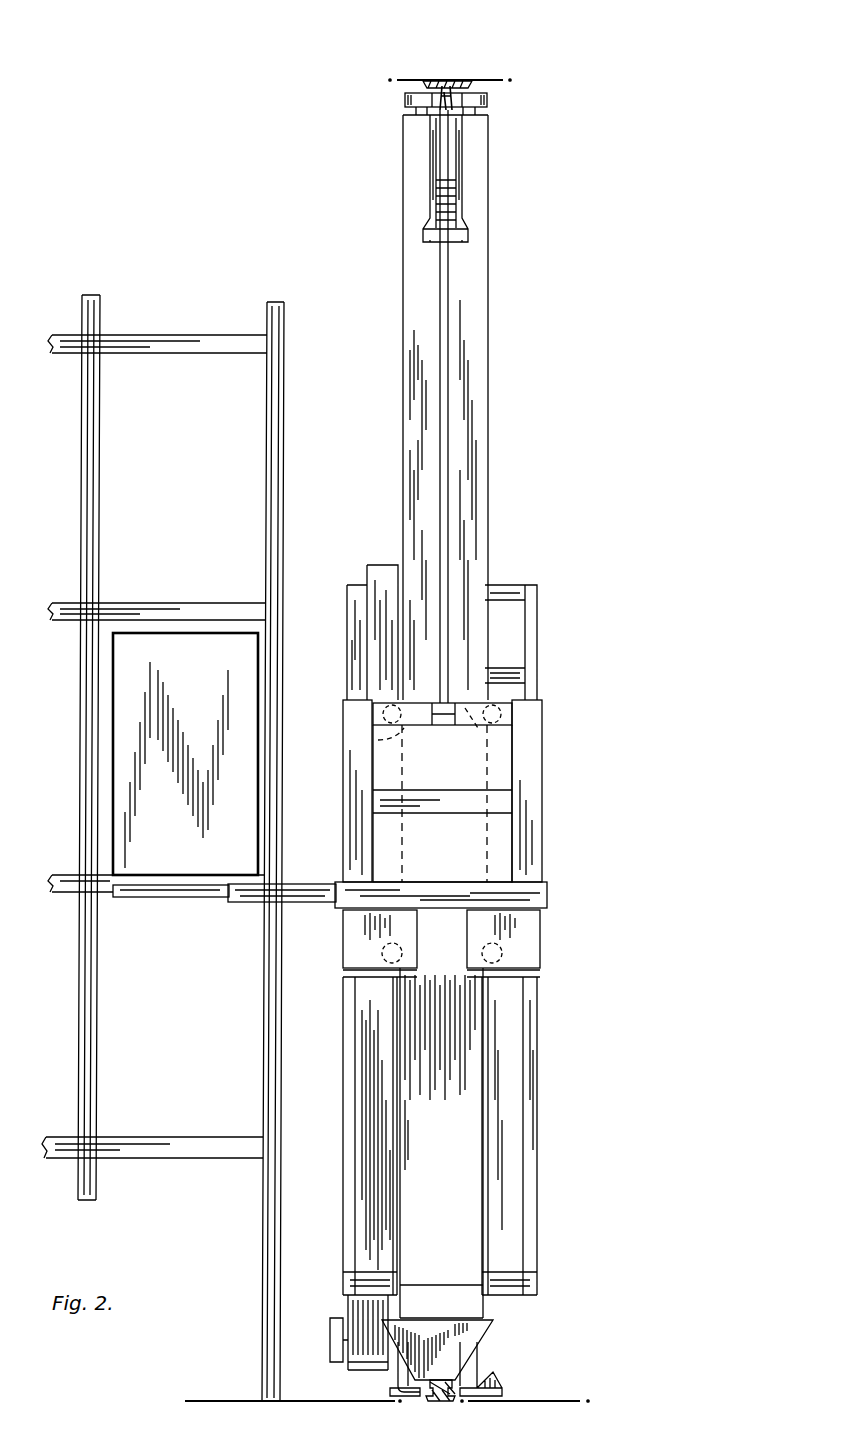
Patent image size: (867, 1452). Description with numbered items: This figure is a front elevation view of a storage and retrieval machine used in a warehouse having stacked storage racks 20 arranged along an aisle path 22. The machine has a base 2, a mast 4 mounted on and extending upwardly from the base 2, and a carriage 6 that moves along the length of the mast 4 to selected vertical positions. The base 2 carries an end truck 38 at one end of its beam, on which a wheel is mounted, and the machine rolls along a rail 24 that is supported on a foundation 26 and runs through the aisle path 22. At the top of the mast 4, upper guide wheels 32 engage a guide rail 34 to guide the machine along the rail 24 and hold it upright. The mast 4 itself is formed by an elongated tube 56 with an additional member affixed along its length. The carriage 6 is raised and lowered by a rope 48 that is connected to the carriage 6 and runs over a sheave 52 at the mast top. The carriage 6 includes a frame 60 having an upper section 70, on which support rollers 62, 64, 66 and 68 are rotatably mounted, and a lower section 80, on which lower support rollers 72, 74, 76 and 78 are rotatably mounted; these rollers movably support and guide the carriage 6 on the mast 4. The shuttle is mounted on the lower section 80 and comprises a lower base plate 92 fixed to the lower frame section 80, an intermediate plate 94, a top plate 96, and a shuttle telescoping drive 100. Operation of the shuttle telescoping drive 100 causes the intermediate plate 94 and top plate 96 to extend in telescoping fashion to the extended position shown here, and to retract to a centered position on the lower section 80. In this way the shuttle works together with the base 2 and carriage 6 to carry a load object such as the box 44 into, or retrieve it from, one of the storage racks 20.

The base 2 is at (575, 1310).
The mast 4 is at (425, 281).
The carriage 6 is at (452, 853).
The stacked storage racks 20 is at (197, 346).
The aisle path 22 is at (300, 1203).
The rail 24 is at (450, 1380).
The foundation 26 is at (548, 1401).
The upper guide wheels 32 is at (487, 100).
The guide rail 34 is at (447, 85).
The end truck 38 is at (448, 1325).
The box 44 is at (125, 690).
The rope 48 is at (448, 315).
The sheave 52 is at (452, 165).
The elongated tube 56 is at (405, 408).
The frame 60 is at (566, 802).
The support roller 62 is at (512, 714).
The support roller 64 is at (466, 732).
The support roller 66 is at (372, 712).
The support roller 68 is at (378, 740).
The upper section 70 is at (542, 742).
The lower support roller 72 is at (470, 981).
The lower support roller 74 is at (500, 948).
The lower support roller 76 is at (392, 945).
The lower support roller 78 is at (400, 972).
The lower section 80 is at (358, 915).
The lower base plate 92 is at (548, 890).
The intermediate plate 94 is at (255, 898).
The top plate 96 is at (158, 902).
The shuttle telescoping drive 100 is at (584, 902).